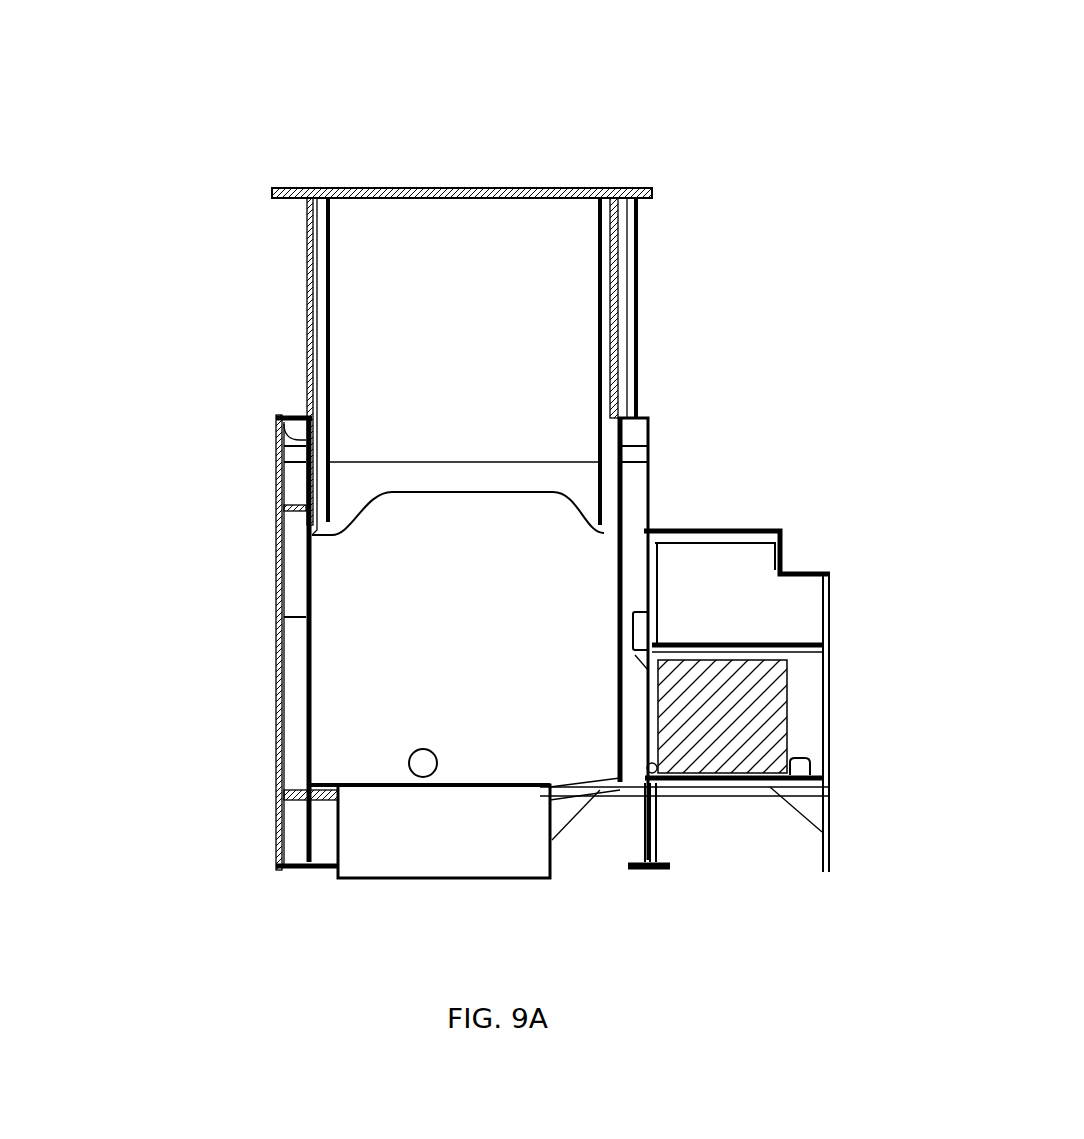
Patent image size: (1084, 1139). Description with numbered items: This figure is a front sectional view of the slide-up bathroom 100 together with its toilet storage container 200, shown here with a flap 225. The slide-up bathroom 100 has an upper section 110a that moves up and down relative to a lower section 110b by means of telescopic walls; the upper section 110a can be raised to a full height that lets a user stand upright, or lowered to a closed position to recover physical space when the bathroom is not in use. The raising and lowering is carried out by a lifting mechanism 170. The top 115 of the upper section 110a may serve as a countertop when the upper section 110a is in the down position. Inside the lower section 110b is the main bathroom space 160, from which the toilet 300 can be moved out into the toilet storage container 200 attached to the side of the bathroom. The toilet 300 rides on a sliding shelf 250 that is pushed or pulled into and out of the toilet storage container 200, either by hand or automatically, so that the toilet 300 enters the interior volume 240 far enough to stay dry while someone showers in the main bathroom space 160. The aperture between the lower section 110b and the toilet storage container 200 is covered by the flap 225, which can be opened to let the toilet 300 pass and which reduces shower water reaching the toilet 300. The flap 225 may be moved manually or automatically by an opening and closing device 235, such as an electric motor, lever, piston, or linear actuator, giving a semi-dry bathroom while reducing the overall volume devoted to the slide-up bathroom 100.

The slide-up bathroom 100 is at (250, 153).
The upper section 110a is at (240, 303).
The lower section 110b is at (248, 620).
The top 115 is at (458, 187).
The lifting mechanism 170 is at (641, 295).
The main bathroom space 160 is at (465, 685).
The opening and closing device 235 is at (655, 600).
The toilet storage container 200 is at (832, 620).
The interior volume 240 is at (812, 680).
The toilet 300 is at (760, 710).
The sliding shelf 250 is at (830, 786).
The flap 225 is at (648, 680).